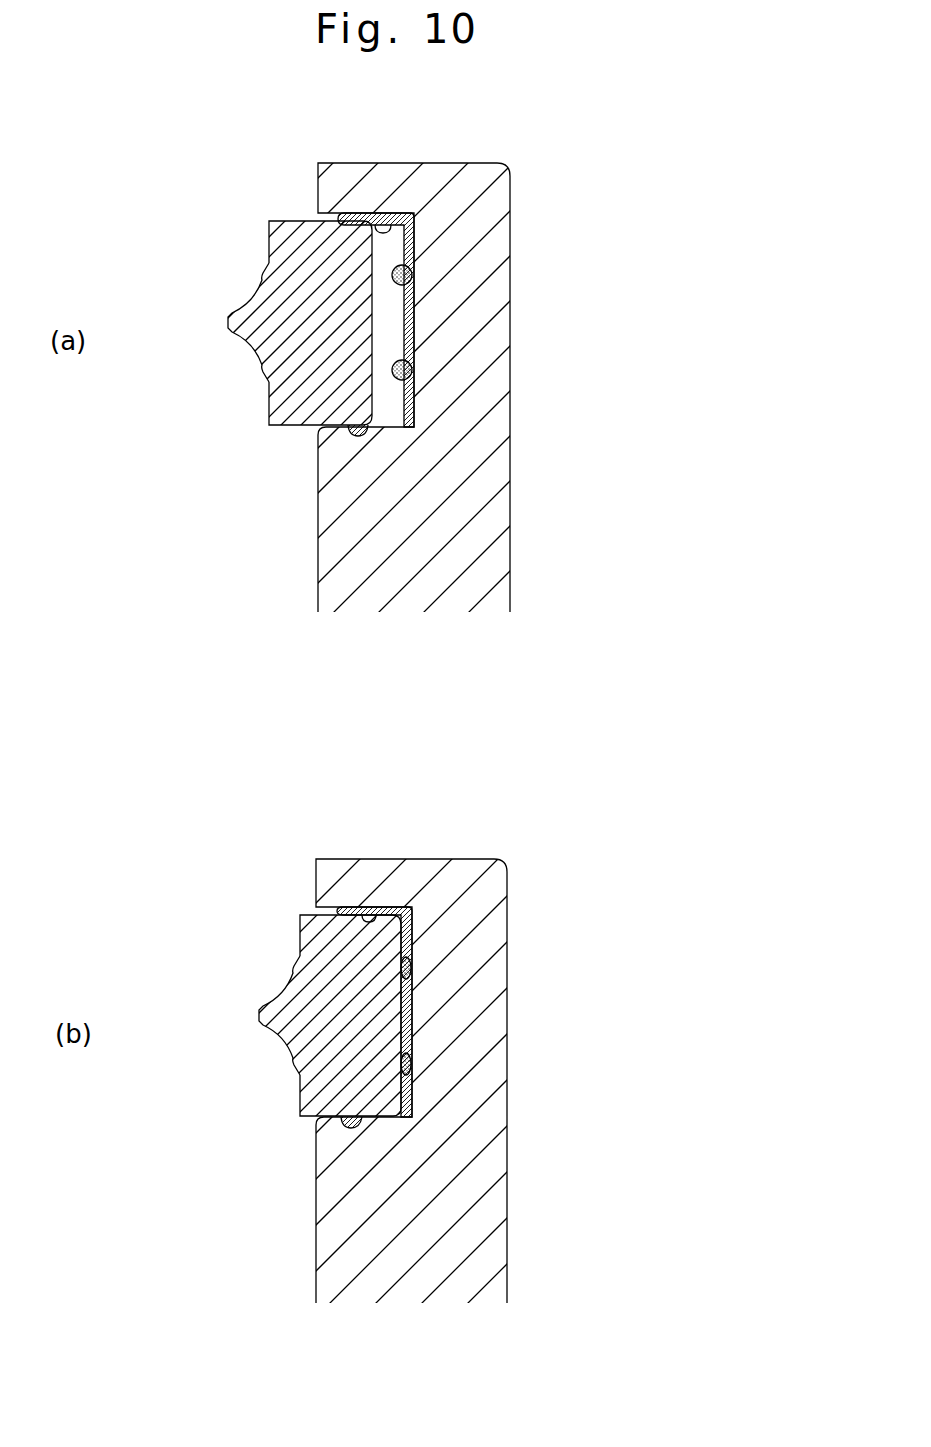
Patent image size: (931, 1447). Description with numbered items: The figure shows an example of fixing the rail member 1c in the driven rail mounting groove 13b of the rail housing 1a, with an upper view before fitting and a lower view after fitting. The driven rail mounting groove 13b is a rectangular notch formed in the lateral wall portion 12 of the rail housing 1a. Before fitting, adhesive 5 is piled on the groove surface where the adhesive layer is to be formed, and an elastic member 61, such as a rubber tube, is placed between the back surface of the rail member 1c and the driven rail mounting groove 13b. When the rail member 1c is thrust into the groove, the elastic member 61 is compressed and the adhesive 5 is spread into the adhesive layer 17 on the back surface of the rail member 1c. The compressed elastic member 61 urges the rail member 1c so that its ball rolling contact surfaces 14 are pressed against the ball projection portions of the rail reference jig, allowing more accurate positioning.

The rail housing 1a is at (526, 168).
The rail member 1c is at (261, 219).
The adhesive 5 is at (413, 320).
The lateral wall portion 12 is at (498, 514).
The driven rail mounting groove 13b is at (371, 212).
The ball rolling contact surface 14 is at (247, 298).
The adhesive layer 17 is at (412, 1016).
The elastic member 61 is at (413, 273).